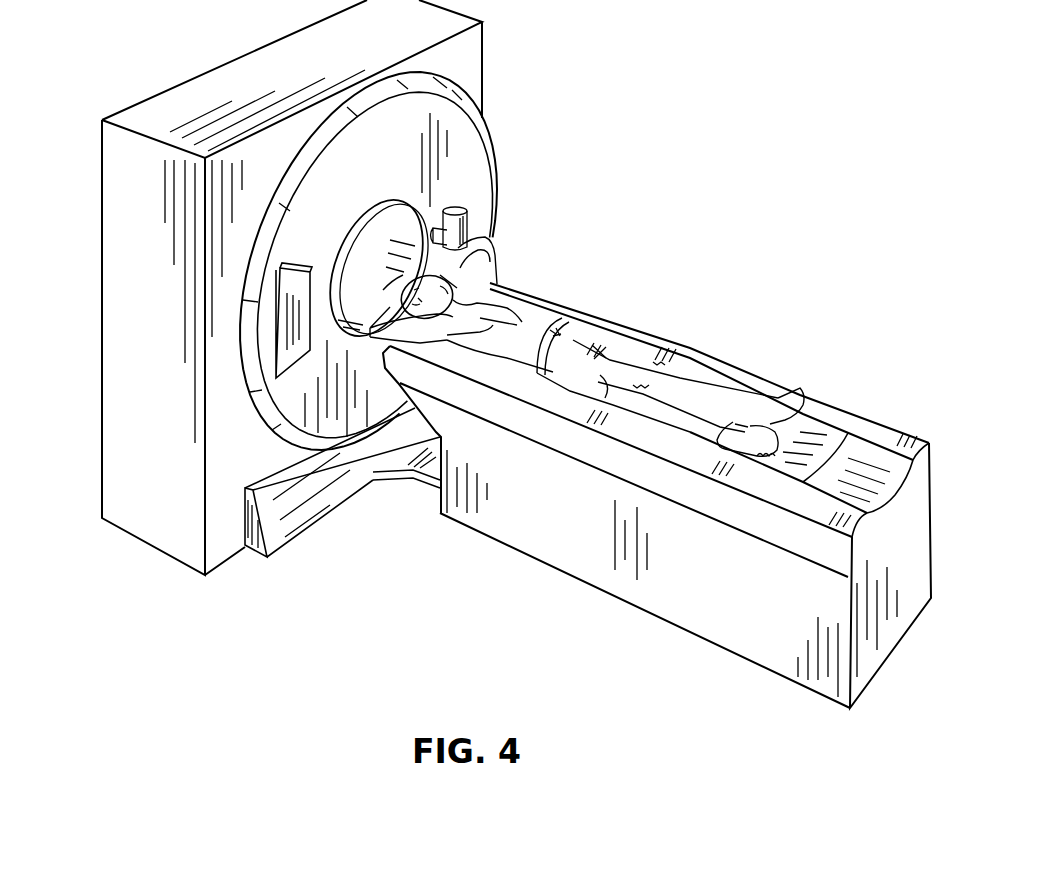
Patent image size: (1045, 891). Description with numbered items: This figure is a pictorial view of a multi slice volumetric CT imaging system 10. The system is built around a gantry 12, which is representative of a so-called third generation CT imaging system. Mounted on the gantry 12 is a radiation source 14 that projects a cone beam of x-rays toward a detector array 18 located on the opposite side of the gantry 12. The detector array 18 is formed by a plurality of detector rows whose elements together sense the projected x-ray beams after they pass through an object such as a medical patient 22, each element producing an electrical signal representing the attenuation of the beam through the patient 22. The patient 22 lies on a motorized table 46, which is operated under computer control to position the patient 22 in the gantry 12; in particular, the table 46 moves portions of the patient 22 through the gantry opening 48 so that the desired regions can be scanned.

The multi slice volumetric CT imaging system 10 is at (416, 508).
The gantry 12 is at (118, 156).
The radiation source 14 is at (468, 230).
The detector array 18 is at (297, 367).
The patient 22 is at (530, 308).
The motorized table 46 is at (540, 530).
The gantry opening 48 is at (345, 246).